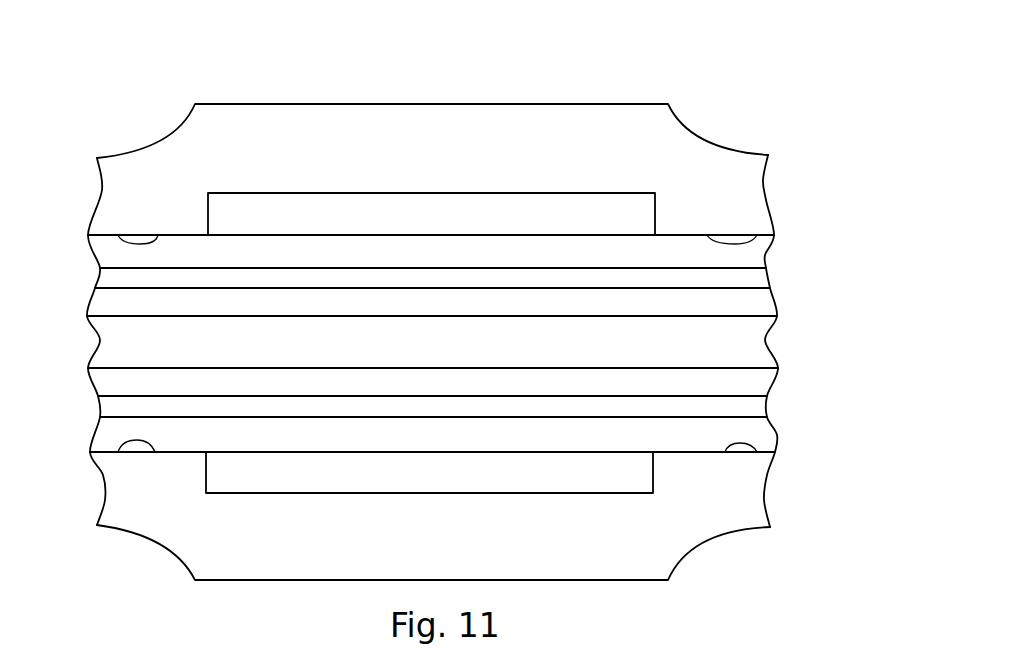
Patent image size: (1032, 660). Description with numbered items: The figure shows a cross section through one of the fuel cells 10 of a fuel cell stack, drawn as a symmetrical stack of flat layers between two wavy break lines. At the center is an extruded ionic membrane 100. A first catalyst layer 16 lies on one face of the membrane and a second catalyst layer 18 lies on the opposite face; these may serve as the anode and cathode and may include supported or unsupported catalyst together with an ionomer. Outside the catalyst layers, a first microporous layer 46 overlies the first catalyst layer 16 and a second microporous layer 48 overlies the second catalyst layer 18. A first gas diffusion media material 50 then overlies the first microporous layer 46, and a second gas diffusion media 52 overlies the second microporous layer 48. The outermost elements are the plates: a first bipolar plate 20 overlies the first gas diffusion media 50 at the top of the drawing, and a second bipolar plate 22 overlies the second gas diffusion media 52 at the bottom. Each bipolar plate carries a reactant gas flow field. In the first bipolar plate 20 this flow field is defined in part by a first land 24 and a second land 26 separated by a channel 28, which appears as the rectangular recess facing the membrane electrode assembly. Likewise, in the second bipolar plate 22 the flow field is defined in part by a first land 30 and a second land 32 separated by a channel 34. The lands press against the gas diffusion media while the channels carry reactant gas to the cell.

The fuel cell 10 is at (750, 105).
The first catalyst layer 16 is at (774, 302).
The second catalyst layer 18 is at (768, 382).
The first bipolar plate 20 is at (776, 196).
The second bipolar plate 22 is at (774, 509).
The first land 24 is at (765, 226).
The second land 26 is at (126, 240).
The channel 28 is at (413, 193).
The first land 30 is at (750, 447).
The second land 32 is at (118, 452).
The channel 34 is at (487, 493).
The first microporous layer 46 is at (763, 281).
The second microporous layer 48 is at (758, 407).
The first gas diffusion media material 50 is at (762, 256).
The second gas diffusion media 52 is at (768, 437).
The ionic membrane 100 is at (762, 343).